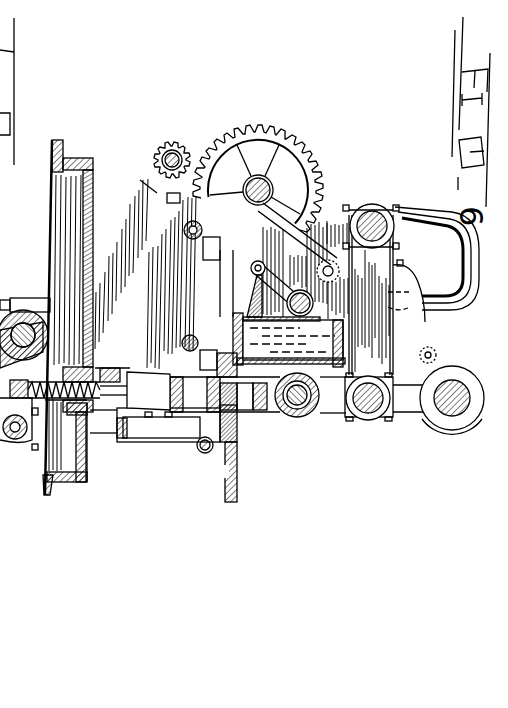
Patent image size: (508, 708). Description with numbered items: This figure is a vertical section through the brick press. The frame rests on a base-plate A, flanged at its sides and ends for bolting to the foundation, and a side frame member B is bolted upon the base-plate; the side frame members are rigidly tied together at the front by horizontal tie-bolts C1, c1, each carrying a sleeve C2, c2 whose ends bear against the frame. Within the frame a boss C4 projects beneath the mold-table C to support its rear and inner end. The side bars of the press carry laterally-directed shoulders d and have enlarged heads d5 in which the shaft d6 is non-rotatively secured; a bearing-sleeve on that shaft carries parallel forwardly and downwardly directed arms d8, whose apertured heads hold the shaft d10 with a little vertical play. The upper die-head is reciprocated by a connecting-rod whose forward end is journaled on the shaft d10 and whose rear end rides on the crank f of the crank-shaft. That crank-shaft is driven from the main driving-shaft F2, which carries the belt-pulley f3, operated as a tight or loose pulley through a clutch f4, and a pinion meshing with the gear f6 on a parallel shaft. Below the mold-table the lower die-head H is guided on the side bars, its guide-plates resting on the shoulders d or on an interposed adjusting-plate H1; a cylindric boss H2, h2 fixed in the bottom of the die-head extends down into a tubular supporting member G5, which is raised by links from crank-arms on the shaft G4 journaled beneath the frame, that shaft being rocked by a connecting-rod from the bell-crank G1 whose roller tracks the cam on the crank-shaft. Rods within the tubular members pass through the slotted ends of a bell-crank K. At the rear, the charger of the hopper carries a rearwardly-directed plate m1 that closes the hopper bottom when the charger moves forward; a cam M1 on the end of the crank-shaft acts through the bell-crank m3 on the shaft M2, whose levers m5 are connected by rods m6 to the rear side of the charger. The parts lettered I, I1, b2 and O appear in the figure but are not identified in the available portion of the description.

The base-plate A is at (88, 458).
The side frame member B is at (140, 180).
The mold-table C is at (205, 178).
The tie-bolt C1 is at (318, 292).
The sleeve C2 is at (187, 227).
The boss C4 is at (185, 237).
The main driving-shaft F2 is at (168, 142).
The crank f is at (330, 180).
The belt-pulley f3 is at (250, 175).
The clutch f4 is at (205, 150).
The gear f6 is at (275, 140).
The rearwardly-directed plate m1 is at (245, 280).
The bell-crank m3 is at (250, 262).
The levers m5 is at (250, 290).
The rods m6 is at (292, 288).
The cam M1 is at (427, 265).
The shaft M2 is at (337, 215).
The pipe column I is at (405, 333).
The tie-bolt c1 is at (430, 300).
The sleeve c2 is at (480, 314).
The lower die-head H is at (128, 437).
The adjusting-plate H1 is at (305, 418).
The cylindric boss H2 is at (345, 420).
The bell-crank G1 is at (285, 415).
The laterally-directed shoulders d is at (470, 398).
The enlarged ends of side bars d5 is at (452, 388).
The shaft d6 is at (470, 425).
The arms d8 is at (405, 413).
The shaft d10 is at (370, 420).
The bell-crank K is at (28, 472).
The support bracket I1 is at (172, 412).
The cylindric boss h2 is at (148, 391).
The spring b2 is at (105, 365).
The shaft G4 is at (30, 298).
The tubular supporting members G5 is at (66, 440).
The base O is at (50, 490).